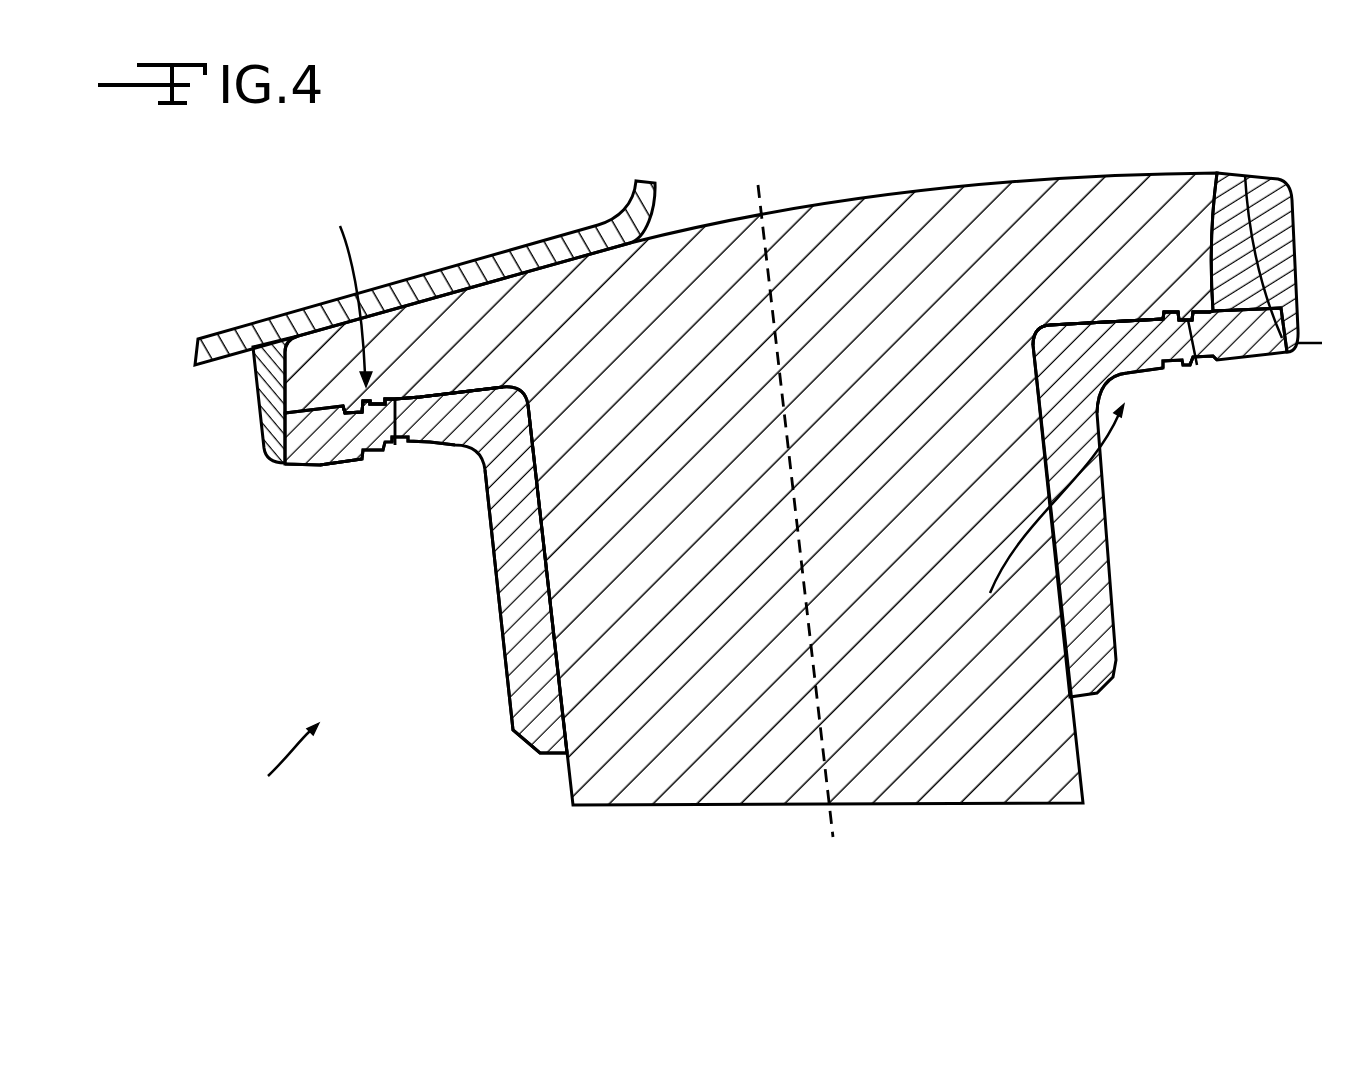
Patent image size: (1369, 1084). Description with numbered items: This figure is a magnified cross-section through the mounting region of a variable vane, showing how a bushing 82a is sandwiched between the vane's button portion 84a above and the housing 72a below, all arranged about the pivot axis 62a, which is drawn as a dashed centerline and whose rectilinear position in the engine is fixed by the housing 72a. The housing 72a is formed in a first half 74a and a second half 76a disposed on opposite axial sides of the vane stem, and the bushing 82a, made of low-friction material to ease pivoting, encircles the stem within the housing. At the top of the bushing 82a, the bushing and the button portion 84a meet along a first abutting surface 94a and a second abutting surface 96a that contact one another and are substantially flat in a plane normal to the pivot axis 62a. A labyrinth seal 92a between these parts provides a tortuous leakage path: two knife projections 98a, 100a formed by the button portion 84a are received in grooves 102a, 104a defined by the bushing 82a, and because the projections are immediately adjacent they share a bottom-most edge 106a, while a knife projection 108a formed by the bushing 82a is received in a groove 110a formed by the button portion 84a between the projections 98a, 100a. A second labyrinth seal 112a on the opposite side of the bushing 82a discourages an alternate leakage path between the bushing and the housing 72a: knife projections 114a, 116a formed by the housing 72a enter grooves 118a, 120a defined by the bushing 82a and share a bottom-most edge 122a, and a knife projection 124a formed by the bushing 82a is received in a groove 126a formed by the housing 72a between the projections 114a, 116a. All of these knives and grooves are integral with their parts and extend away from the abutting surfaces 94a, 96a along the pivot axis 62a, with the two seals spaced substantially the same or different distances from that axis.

The pivot axis 62a is at (770, 260).
The housing 72a is at (267, 756).
The first half 74a is at (335, 640).
The second half 76a is at (1255, 607).
The bushing 82a is at (515, 598).
The button portion 84a is at (538, 312).
The labyrinth seal 92a is at (341, 292).
The first abutting surface 94a is at (452, 400).
The second abutting surface 96a is at (425, 399).
The knife projection 98a is at (345, 460).
The knife projection 100a is at (1207, 313).
The groove 102a is at (1170, 322).
The groove 104a is at (1245, 175).
The bottom-most edge 106a is at (1187, 318).
The knife projection 108a is at (1197, 368).
The groove 110a is at (1187, 320).
The second labyrinth seal 112a is at (1037, 516).
The knife projection 114a is at (395, 398).
The knife projection 116a is at (396, 408).
The groove 118a is at (346, 458).
The groove 120a is at (422, 444).
The bottom-most edge 122a is at (394, 448).
The knife projection 124a is at (1179, 366).
The groove 126a is at (1197, 365).